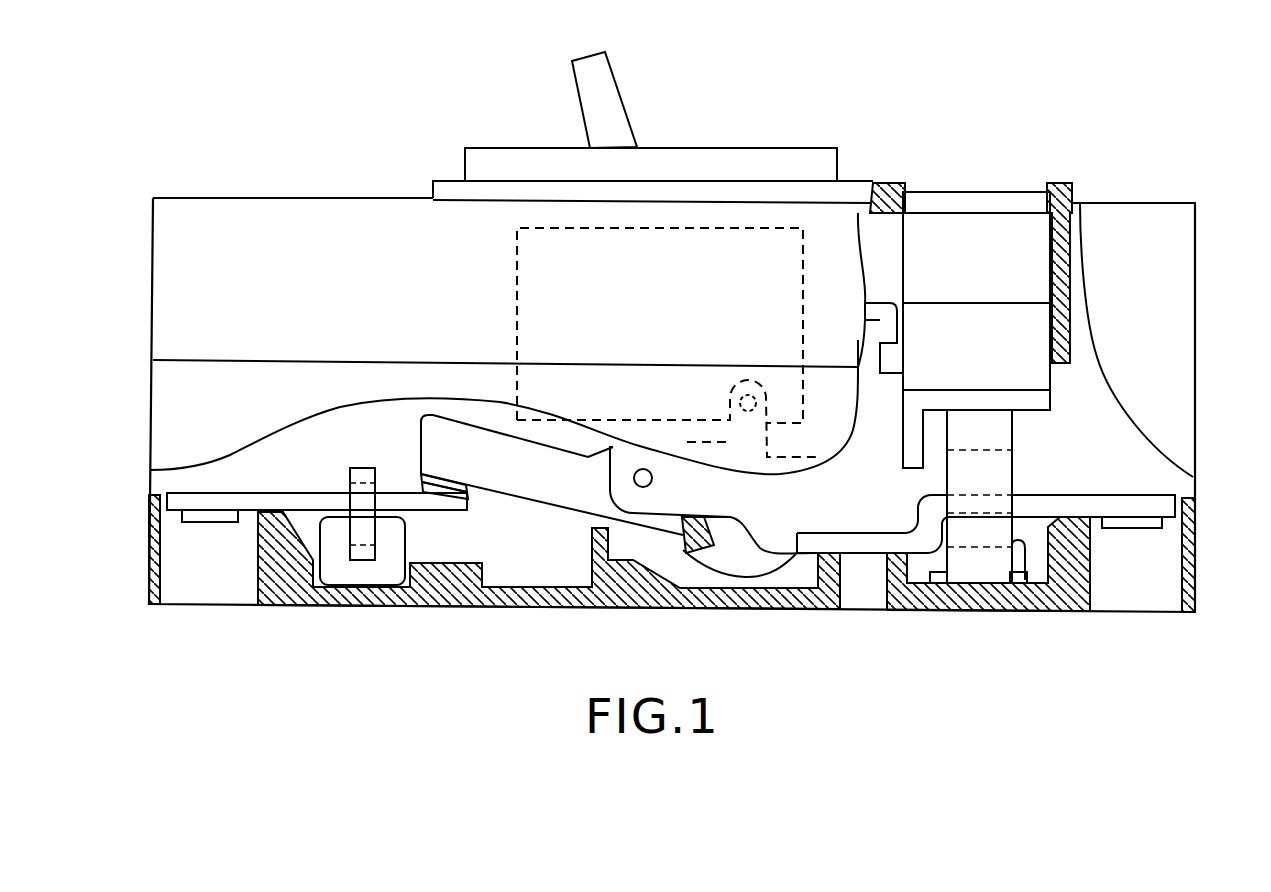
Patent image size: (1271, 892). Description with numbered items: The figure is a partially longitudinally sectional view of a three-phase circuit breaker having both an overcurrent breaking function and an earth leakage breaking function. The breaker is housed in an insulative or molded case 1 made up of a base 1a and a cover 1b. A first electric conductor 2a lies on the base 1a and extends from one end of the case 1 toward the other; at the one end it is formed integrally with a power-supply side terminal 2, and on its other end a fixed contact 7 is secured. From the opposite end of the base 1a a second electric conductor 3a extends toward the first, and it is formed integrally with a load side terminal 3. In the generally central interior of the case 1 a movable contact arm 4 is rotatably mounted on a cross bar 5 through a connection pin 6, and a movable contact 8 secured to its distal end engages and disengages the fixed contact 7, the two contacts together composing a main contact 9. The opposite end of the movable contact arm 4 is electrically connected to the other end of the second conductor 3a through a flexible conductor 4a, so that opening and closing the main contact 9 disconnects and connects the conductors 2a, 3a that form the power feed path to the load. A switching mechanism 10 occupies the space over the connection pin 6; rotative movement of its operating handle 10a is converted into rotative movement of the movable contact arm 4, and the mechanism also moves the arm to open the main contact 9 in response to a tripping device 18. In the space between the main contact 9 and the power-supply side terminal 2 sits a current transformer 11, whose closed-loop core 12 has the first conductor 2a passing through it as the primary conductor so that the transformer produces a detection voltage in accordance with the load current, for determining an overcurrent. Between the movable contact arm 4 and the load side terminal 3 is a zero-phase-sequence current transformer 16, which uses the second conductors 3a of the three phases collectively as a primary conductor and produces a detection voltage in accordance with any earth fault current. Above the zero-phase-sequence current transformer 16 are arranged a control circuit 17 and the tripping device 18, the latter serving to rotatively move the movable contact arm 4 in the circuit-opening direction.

The insulative case 1 is at (150, 202).
The base 1a is at (275, 605).
The cover 1b is at (295, 197).
The power-supply side terminal 2 is at (166, 495).
The first electric conductor 2a is at (280, 477).
The load side terminal 3 is at (1185, 492).
The second electric conductor 3a is at (873, 532).
The movable contact arm 4 is at (557, 497).
The flexible conductor 4a is at (743, 567).
The cross bar 5 is at (625, 457).
The connection pin 6 is at (654, 476).
The fixed contact 7 is at (420, 486).
The movable contact 8 is at (420, 476).
The main contact 9 is at (476, 501).
The switching mechanism 10 is at (700, 258).
The operating handle 10a is at (620, 84).
The current transformer 11 is at (412, 545).
The core 12 is at (358, 467).
The zero-phase-sequence current transformer 16 is at (1010, 567).
The control circuit 17 is at (977, 212).
The tripping device 18 is at (1052, 381).